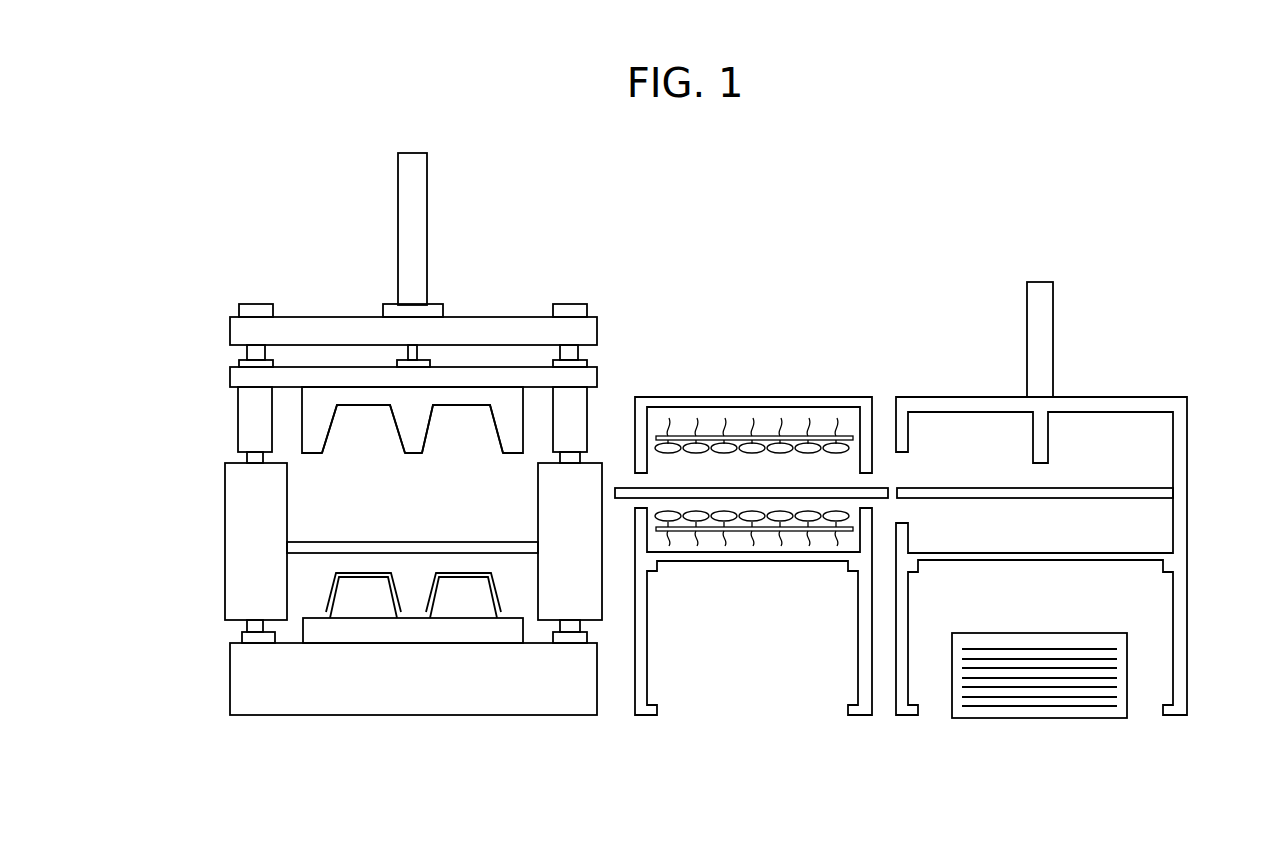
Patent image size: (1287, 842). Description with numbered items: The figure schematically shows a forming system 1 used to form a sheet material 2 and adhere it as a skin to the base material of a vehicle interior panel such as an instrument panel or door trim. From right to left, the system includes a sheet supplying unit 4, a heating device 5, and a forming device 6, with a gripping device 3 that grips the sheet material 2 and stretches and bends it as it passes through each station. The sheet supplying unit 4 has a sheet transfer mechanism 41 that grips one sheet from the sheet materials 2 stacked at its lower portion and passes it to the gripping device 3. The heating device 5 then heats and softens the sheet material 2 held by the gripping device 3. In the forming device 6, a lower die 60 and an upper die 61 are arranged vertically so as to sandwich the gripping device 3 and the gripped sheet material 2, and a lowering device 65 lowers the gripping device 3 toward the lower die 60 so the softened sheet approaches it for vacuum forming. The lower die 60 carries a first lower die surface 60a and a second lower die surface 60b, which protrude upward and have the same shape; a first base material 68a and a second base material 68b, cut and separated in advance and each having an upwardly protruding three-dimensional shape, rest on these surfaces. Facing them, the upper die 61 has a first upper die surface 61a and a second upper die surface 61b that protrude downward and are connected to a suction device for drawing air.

The forming system 1 is at (1042, 175).
The sheet material 2 is at (1098, 647).
The gripping device 3 is at (403, 550).
The sheet supplying unit 4 is at (1102, 291).
The sheet transfer mechanism 41 is at (1045, 342).
The heating device 5 is at (823, 364).
The forming device 6 is at (535, 242).
The lower die 60 is at (417, 640).
The first lower die surface 60a is at (358, 590).
The second lower die surface 60b is at (467, 590).
The upper die 61 is at (320, 417).
The first upper die surface 61a is at (363, 407).
The second upper die surface 61b is at (460, 407).
The lowering device 65 is at (257, 530).
The first base material 68a is at (348, 573).
The second base material 68b is at (447, 573).